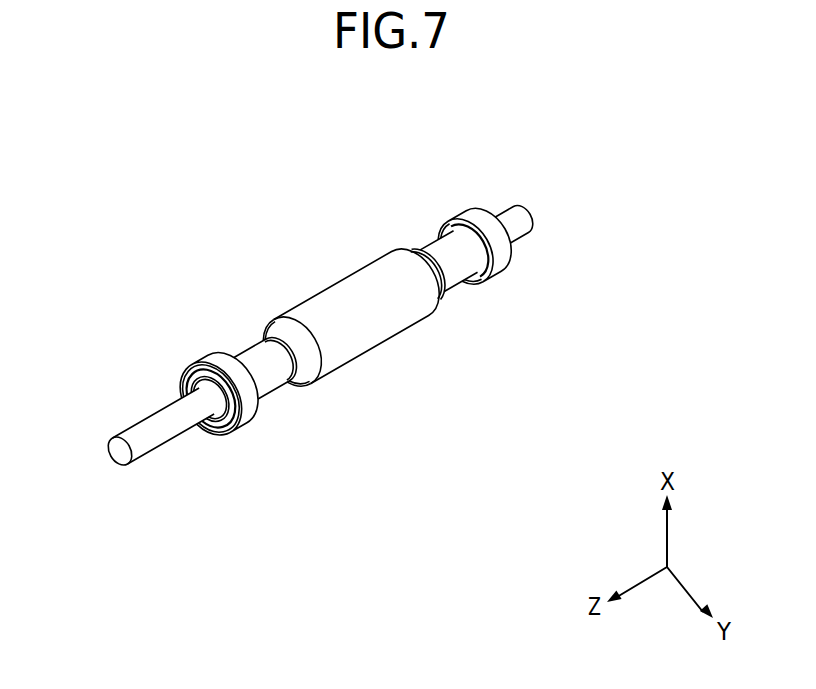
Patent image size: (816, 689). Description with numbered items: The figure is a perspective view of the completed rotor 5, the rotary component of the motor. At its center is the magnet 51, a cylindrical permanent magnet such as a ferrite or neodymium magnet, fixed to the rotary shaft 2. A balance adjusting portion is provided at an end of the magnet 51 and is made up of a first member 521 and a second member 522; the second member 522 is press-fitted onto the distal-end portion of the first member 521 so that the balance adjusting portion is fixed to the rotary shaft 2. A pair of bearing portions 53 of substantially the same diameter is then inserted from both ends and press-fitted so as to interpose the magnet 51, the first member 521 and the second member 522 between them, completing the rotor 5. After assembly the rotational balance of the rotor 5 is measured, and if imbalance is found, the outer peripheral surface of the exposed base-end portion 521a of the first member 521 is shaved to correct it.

The rotor 5 is at (572, 126).
The rotary shaft 2 is at (141, 438).
The bearing portion 53 is at (216, 356).
The second member 522 is at (253, 352).
The first member 521 is at (267, 303).
The base-end portion 521a is at (302, 358).
The magnet 51 is at (342, 306).